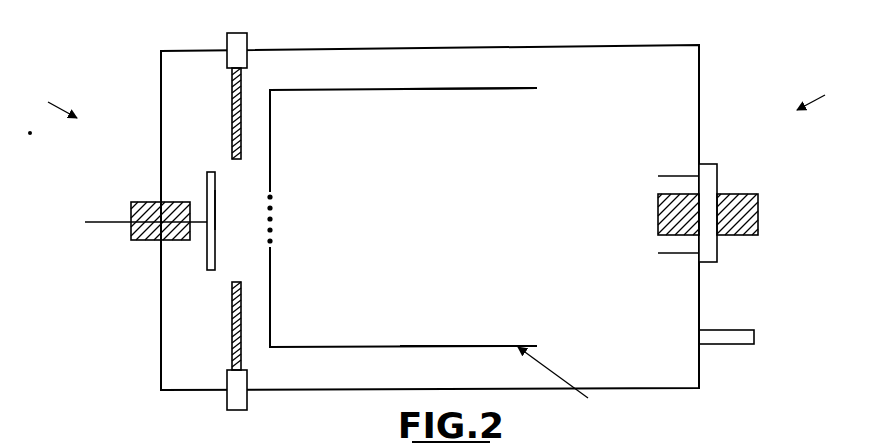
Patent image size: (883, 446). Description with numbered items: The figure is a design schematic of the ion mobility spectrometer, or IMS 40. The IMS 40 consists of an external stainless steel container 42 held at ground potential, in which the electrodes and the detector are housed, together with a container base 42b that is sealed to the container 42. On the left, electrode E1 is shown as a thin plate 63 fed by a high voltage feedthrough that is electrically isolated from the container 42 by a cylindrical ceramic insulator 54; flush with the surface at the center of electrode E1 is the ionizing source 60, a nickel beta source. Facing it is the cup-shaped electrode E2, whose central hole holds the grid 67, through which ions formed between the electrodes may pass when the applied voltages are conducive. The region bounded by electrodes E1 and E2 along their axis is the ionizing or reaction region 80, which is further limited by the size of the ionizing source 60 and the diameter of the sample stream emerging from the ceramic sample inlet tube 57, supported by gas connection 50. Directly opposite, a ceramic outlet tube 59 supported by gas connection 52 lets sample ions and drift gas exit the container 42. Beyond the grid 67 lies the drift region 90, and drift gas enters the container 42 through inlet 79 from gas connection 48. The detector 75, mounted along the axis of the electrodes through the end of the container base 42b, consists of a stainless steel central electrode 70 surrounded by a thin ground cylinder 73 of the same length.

The IMS 40 is at (48, 111).
The container 42 is at (621, 45).
The container base 42b is at (700, 68).
The gas connection 48 is at (740, 345).
The gas connection 50 is at (226, 397).
The gas connection 52 is at (227, 43).
The ceramic insulator 54 is at (157, 242).
The sample inlet tube 57 is at (242, 345).
The outlet tube 59 is at (242, 92).
The ionizing source 60 is at (216, 213).
The electrode plate 63 is at (207, 256).
The grid 67 is at (277, 215).
The central electrode 70 is at (735, 194).
The ground cylinder 73 is at (683, 257).
The detector 75 is at (826, 95).
The inlet 79 is at (699, 337).
The ionizing region 80 is at (258, 254).
The drift region 90 is at (510, 233).
The electrode E1 is at (100, 220).
The electrode E2 is at (569, 383).